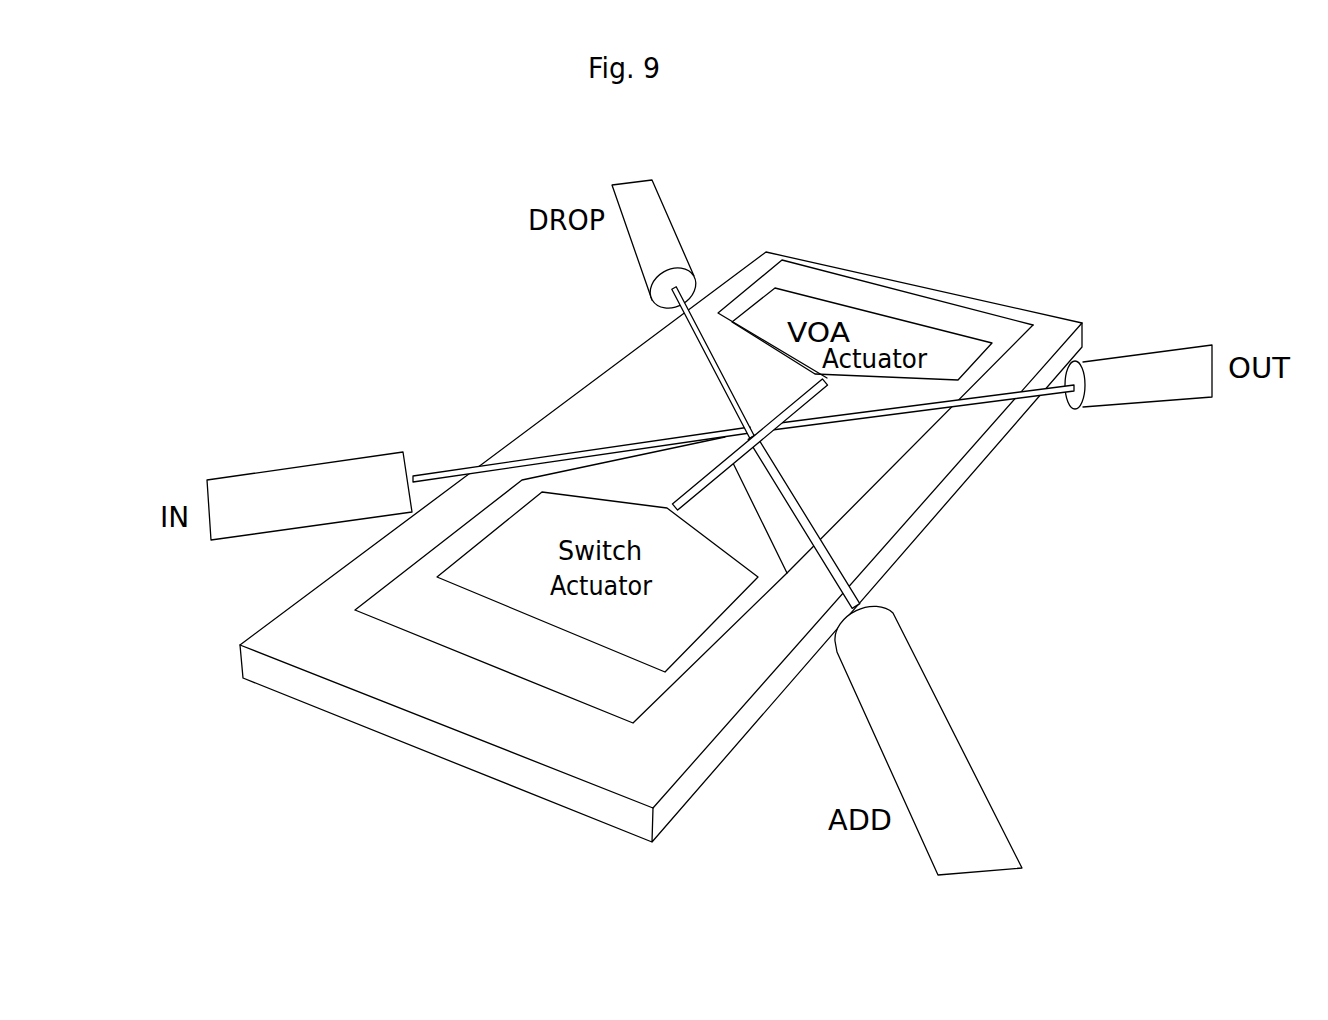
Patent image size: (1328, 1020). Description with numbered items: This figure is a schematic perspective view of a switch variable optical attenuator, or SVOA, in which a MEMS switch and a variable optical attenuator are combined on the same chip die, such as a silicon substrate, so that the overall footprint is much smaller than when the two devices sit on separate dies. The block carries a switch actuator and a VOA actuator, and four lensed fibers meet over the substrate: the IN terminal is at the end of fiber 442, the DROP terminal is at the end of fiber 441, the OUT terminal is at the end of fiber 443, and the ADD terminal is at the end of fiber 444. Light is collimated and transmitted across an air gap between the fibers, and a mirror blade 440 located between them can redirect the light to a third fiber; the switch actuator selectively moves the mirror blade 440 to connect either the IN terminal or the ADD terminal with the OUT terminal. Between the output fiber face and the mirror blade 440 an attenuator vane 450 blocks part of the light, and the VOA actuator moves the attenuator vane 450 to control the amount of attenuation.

The mirror blade 440 is at (713, 480).
The fiber 441 is at (690, 347).
The fiber 442 is at (513, 462).
The fiber 443 is at (937, 413).
The fiber 444 is at (820, 533).
The attenuator vane 450 is at (785, 393).